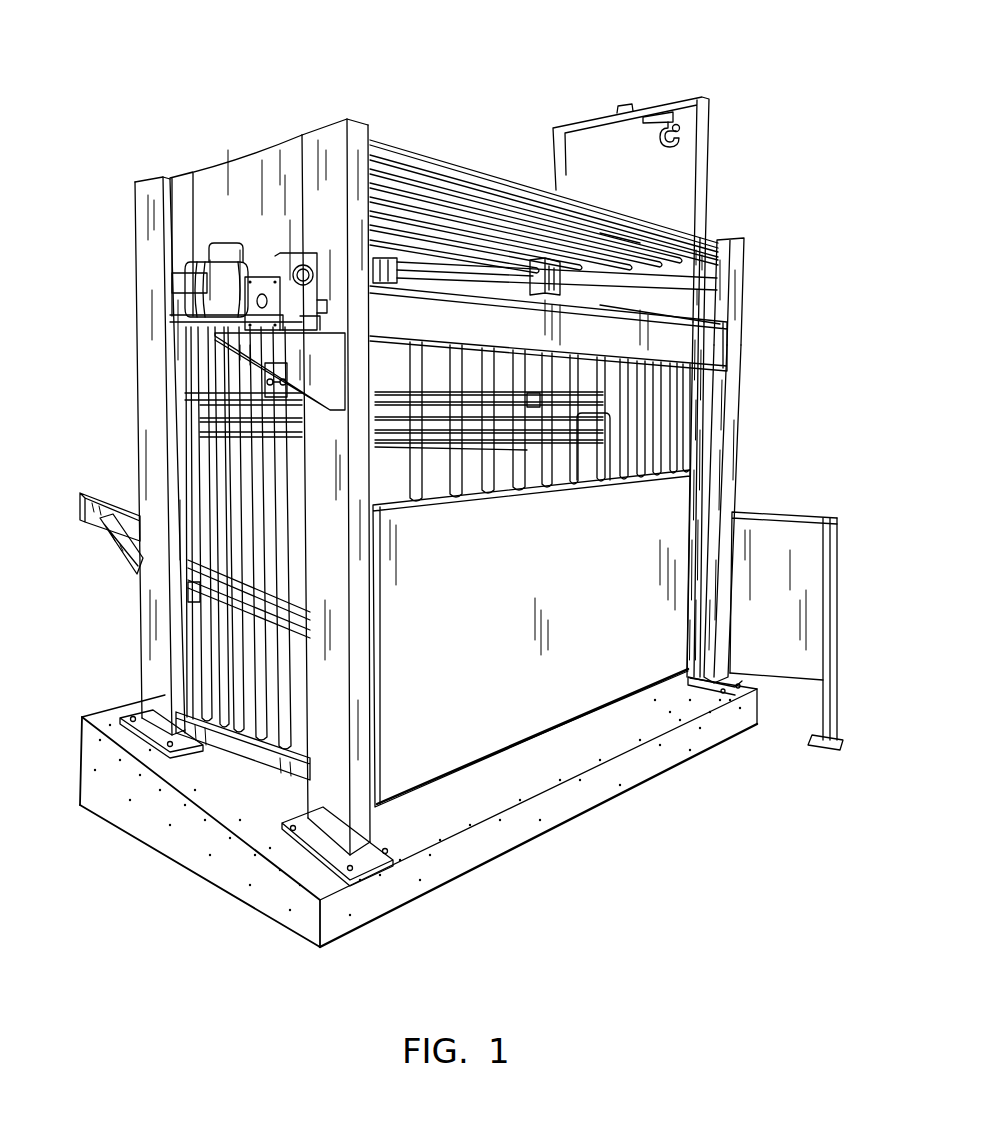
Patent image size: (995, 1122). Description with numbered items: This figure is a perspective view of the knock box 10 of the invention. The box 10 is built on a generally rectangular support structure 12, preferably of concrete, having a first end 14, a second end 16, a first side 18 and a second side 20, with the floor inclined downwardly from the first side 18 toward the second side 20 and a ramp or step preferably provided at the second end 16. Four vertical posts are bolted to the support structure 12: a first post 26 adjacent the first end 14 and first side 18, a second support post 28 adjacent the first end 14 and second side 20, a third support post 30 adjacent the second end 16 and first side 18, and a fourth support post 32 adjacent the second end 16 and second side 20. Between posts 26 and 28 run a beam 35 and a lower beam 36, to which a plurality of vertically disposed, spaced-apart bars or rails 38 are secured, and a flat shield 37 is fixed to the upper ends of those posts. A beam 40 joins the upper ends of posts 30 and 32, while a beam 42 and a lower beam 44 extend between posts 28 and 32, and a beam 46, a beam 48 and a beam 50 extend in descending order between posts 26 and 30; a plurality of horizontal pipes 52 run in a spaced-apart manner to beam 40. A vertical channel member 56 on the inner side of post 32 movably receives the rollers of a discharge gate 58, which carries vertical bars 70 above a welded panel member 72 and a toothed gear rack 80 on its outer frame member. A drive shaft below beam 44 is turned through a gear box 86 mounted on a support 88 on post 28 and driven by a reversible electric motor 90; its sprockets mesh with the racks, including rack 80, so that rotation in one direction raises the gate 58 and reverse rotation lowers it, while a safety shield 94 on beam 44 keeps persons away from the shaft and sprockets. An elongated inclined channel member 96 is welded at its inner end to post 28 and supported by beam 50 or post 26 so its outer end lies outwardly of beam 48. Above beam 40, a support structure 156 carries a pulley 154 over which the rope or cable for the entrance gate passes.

The knock box 10 is at (487, 135).
The support structure 12 is at (128, 845).
The first end 14 is at (222, 865).
The second end 16 is at (795, 718).
The first side 18 is at (75, 757).
The second side 20 is at (490, 837).
The first vertically disposed post 26 is at (160, 645).
The second vertically disposed support post 28 is at (337, 803).
The third vertically disposed support post 30 is at (722, 241).
The fourth support post 32 is at (733, 455).
The horizontally disposed beam 35 is at (183, 323).
The horizontally disposed beam 36 is at (247, 748).
The flat shield 37 is at (222, 229).
The vertically disposed bars or rails 38 is at (237, 622).
The horizontally disposed beam 40 is at (687, 277).
The horizontally disposed beam 42 is at (421, 150).
The horizontally disposed beam 44 is at (743, 322).
The horizontally disposed beam 46 is at (500, 265).
The horizontally disposed beam 48 is at (192, 394).
The horizontally disposed beam 50 is at (195, 593).
The horizontally disposed bars, rails or pipes 52 is at (600, 240).
The vertically disposed channel member 56 is at (712, 320).
The discharge gate 58 is at (552, 715).
The vertically disposed bars 70 is at (575, 465).
The panel member 72 is at (578, 642).
The elongated toothed gear rack 80 is at (690, 562).
The gear box 86 is at (320, 323).
The support 88 is at (330, 372).
The reversible electric motor 90 is at (192, 273).
The safety shield 94 is at (584, 347).
The elongated and inclined channel member 96 is at (92, 492).
The pulley 154 is at (680, 140).
The support structure 156 is at (672, 98).